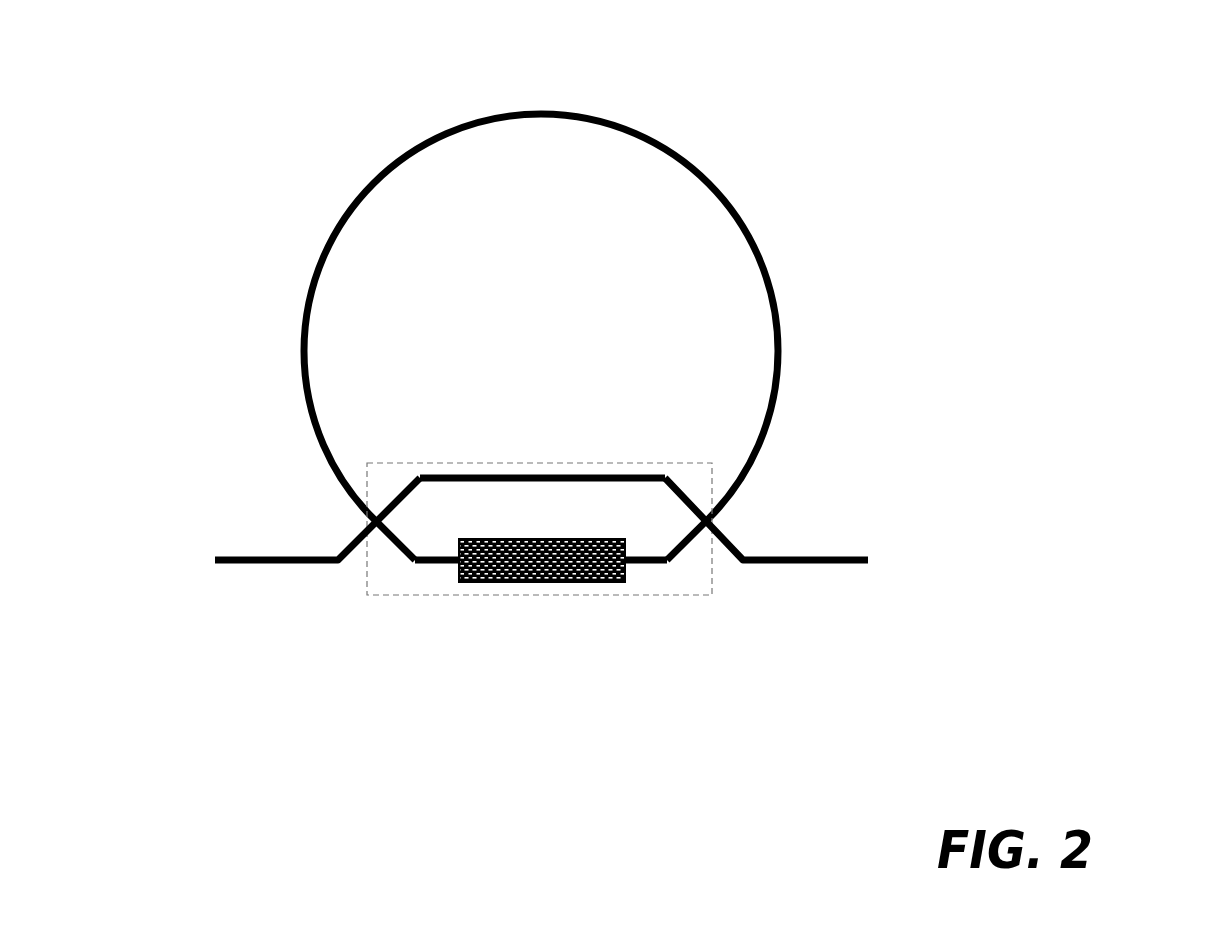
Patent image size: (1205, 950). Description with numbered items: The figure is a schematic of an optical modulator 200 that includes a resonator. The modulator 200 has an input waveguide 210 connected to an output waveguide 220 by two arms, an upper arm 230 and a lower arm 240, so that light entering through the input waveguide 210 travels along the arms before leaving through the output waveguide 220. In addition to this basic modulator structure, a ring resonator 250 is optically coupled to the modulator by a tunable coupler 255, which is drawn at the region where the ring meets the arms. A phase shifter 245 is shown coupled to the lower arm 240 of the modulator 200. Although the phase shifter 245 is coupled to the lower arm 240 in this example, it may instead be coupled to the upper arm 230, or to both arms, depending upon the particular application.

The modulator 200 is at (982, 29).
The input waveguide 210 is at (274, 556).
The output waveguide 220 is at (845, 556).
The upper arm 230 is at (422, 475).
The lower arm 240 is at (417, 565).
The phase shifter 245 is at (568, 583).
The ring resonator 250 is at (648, 127).
The tunable coupler 255 is at (712, 578).